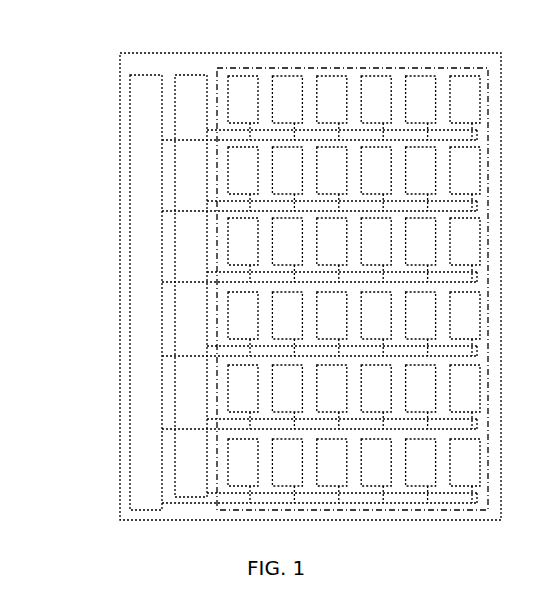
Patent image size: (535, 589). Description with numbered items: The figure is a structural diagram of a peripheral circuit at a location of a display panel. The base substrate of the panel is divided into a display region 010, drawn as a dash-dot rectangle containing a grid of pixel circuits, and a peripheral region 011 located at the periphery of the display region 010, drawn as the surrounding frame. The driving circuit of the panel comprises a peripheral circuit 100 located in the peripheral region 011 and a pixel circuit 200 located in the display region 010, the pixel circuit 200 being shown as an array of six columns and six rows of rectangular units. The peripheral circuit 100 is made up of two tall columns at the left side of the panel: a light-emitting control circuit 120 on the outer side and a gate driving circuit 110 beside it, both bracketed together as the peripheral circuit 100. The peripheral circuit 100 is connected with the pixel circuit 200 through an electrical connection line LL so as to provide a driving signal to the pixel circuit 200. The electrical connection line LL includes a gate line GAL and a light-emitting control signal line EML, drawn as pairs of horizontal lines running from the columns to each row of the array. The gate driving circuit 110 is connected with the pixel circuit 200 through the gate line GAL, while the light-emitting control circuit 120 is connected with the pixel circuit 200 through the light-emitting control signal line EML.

The peripheral region 011 is at (168, 70).
The display region 010 is at (312, 72).
The pixel circuit 200 is at (248, 77).
The peripheral circuit 100 is at (115, 292).
The light-emitting control circuit 120 is at (143, 113).
The gate driving circuit 110 is at (188, 180).
The electrical connection line LL is at (252, 316).
The gate line GAL is at (207, 272).
The light-emitting control signal line EML is at (163, 282).